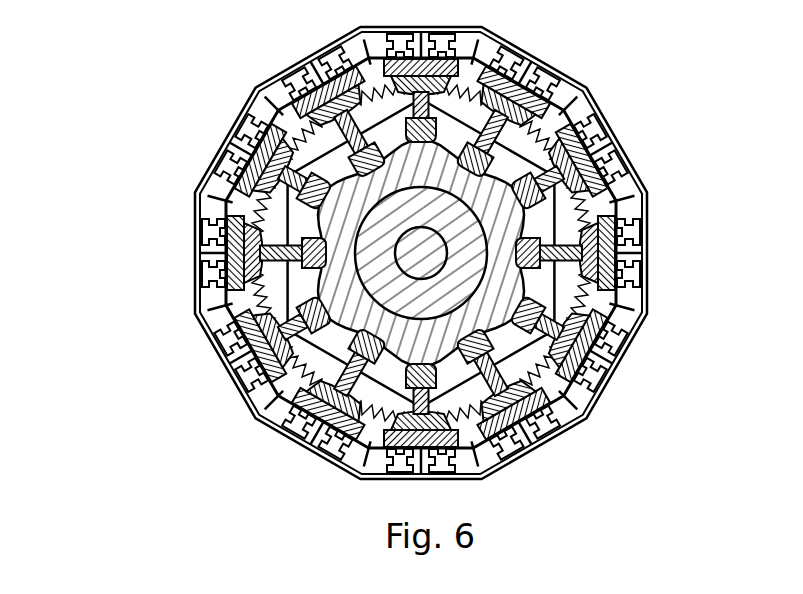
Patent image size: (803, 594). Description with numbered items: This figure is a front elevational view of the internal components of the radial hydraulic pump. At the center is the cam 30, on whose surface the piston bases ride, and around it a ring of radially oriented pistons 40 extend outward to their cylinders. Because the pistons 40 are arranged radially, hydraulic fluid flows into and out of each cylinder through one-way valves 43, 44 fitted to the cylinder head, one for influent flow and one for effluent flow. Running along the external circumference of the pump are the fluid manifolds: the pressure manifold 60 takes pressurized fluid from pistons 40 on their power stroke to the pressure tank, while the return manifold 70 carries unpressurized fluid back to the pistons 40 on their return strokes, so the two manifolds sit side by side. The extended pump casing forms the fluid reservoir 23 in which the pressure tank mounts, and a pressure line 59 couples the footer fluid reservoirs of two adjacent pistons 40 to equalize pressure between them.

The fluid reservoir 23 is at (568, 225).
The cam 30 is at (522, 292).
The piston 40 is at (583, 112).
The one-way valve 43 is at (520, 458).
The one-way valve 44 is at (570, 430).
The pressure line 59 is at (262, 398).
The pressure manifold 60 is at (207, 302).
The return manifold 70 is at (197, 207).